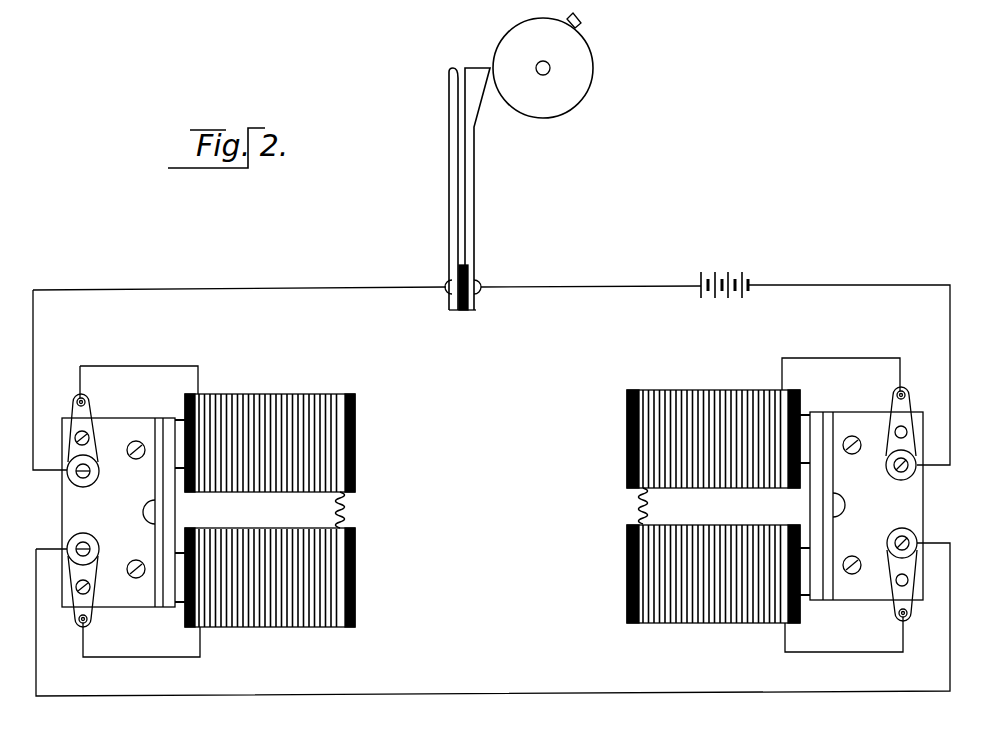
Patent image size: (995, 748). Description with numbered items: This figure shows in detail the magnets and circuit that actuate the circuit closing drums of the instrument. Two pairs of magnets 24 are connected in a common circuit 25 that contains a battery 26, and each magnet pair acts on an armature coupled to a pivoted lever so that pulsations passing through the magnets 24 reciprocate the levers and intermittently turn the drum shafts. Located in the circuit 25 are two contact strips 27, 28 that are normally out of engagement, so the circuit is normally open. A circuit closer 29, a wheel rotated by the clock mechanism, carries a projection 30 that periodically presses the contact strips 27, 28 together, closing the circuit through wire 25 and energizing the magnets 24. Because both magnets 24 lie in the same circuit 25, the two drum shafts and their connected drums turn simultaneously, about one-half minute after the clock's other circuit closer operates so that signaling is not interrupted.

The magnets 24 is at (300, 393).
The circuit 25 is at (349, 288).
The battery 26 is at (748, 278).
The contact strip 27 is at (449, 152).
The contact strip 28 is at (475, 156).
The circuit closer 29 is at (543, 68).
The projection 30 is at (582, 30).